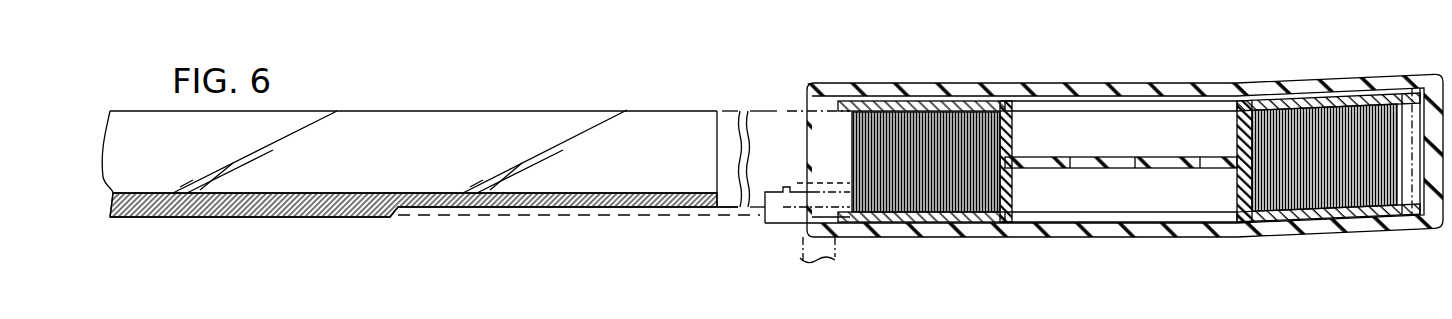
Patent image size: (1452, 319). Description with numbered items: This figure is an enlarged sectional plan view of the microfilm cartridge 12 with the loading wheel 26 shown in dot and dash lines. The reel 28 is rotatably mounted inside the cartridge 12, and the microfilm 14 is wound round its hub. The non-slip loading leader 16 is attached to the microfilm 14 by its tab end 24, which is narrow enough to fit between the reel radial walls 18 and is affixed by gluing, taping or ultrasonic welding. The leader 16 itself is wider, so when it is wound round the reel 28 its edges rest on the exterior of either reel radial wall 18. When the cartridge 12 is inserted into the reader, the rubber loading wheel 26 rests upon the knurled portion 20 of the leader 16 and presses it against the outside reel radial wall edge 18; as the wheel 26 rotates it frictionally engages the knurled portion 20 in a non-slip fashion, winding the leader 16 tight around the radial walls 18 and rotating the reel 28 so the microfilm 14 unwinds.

The microfilm cartridge 12 is at (1145, 59).
The microfilm 14 is at (767, 110).
The non-slip loading leader 16 is at (141, 122).
The reel radial walls 18 is at (917, 108).
The knurled portion 20 is at (331, 200).
The tab end 24 is at (636, 127).
The loading wheel 26 is at (775, 227).
The reel 28 is at (1278, 103).